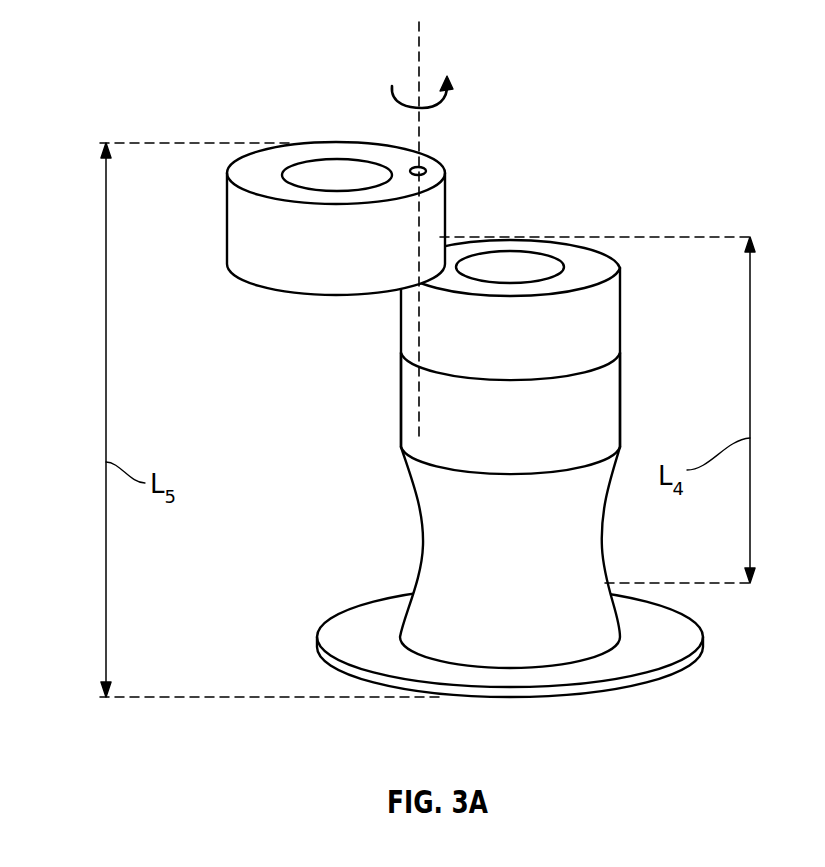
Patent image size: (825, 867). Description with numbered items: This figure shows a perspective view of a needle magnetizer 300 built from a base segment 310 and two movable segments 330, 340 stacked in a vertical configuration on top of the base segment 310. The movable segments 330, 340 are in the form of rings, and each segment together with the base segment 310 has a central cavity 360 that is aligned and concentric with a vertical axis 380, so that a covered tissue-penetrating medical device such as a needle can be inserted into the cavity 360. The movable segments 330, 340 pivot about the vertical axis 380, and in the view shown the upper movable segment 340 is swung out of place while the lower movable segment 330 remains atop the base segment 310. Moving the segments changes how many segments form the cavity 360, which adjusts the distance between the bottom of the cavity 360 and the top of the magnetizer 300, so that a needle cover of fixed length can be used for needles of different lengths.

The magnetizer 300 is at (422, 354).
The base segment 310 is at (440, 428).
The movable segment 330 is at (440, 313).
The movable segment 340 is at (225, 233).
The central cavity 360 is at (345, 172).
The vertical axis 380 is at (420, 48).